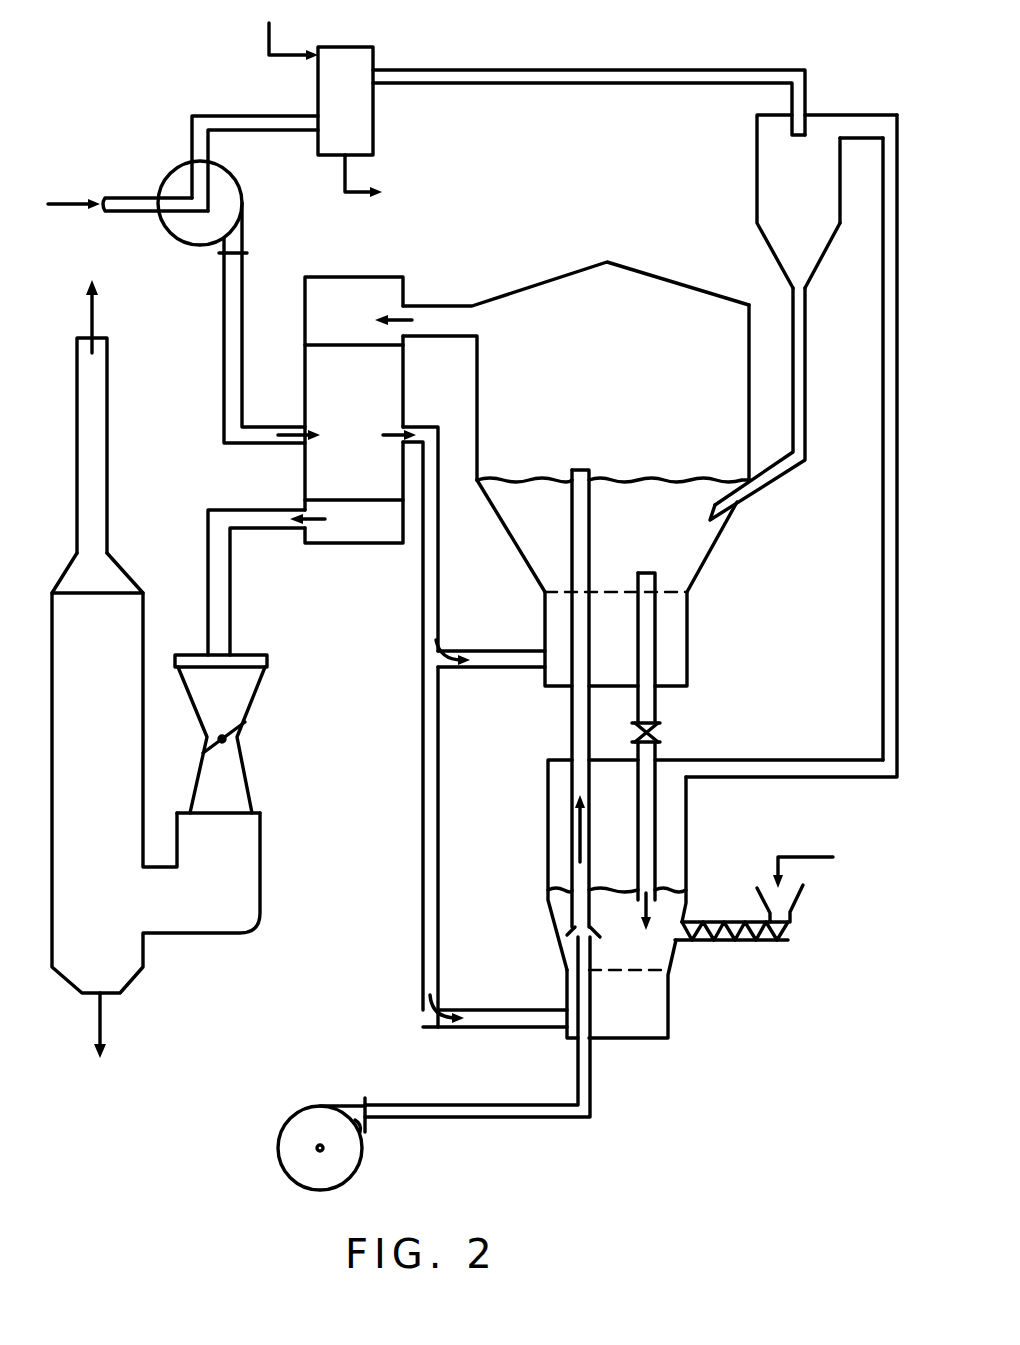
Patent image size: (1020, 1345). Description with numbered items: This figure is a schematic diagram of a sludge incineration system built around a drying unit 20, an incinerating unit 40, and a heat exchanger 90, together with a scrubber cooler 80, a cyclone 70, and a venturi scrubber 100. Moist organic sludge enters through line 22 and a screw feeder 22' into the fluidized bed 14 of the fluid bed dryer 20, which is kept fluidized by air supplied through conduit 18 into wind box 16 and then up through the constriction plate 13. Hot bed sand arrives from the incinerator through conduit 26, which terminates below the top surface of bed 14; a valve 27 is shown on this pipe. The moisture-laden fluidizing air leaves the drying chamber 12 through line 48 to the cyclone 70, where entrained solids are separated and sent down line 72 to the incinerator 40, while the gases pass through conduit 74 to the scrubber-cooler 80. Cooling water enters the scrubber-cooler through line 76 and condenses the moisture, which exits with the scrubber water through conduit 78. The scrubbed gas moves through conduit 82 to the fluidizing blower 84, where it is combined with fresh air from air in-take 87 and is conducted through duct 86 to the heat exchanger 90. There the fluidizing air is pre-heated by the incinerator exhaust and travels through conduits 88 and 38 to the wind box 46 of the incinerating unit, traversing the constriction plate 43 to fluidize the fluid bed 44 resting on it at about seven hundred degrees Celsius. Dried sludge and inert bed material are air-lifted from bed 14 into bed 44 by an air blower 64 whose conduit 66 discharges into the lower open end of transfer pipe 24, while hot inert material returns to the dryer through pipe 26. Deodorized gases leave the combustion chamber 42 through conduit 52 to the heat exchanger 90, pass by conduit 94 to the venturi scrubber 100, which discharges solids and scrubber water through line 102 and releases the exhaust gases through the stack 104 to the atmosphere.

The drying chamber 12 is at (560, 843).
The constriction plate 13 is at (650, 975).
The fluidized bed 14 is at (632, 954).
The wind box 16 is at (640, 1005).
The conduit 18 is at (495, 1010).
The drying unit 20 is at (690, 828).
The line 22 is at (838, 865).
The screw feeder 22' is at (733, 955).
The transfer pipe 24 is at (570, 705).
The conduit 26 is at (655, 710).
The valve 27 is at (658, 736).
The conduit 38 is at (480, 651).
The incinerating unit 40 is at (655, 280).
The combustion chamber 42 is at (730, 390).
The constriction plate 43 is at (672, 590).
The fluid bed 44 is at (640, 527).
The wind box 46 is at (673, 640).
The line 48 is at (803, 757).
The conduit 52 is at (442, 306).
The air blower 64 is at (365, 1145).
The conduit 66 is at (584, 1080).
The cyclone 70 is at (757, 160).
The line 72 is at (810, 390).
The conduit 74 is at (513, 70).
The line 76 is at (288, 52).
The conduit 78 is at (335, 173).
The scrubber cooler 80 is at (363, 47).
The conduit 82 is at (250, 116).
The fluidizing blower 84 is at (176, 232).
The air duct 86 is at (230, 332).
The air in-take 87 is at (123, 198).
The conduit 88 is at (445, 588).
The heat exchanger 90 is at (350, 277).
The conduit 94 is at (238, 592).
The venturi scrubber 100 is at (282, 658).
The line 102 is at (100, 1015).
The stack 104 is at (97, 408).